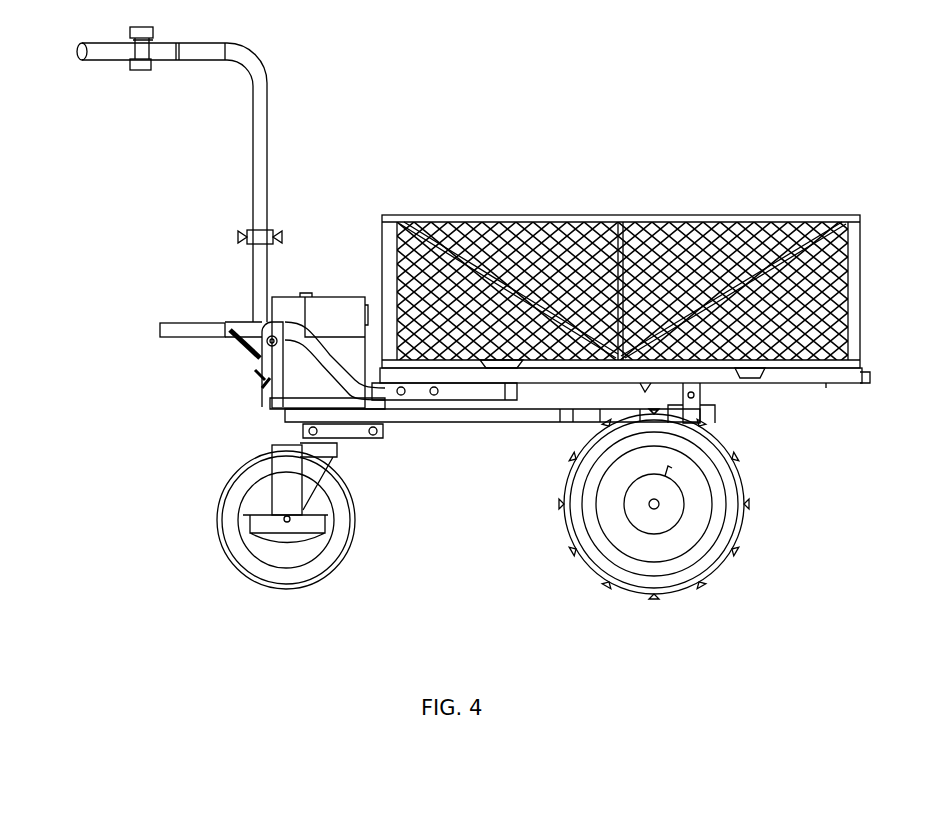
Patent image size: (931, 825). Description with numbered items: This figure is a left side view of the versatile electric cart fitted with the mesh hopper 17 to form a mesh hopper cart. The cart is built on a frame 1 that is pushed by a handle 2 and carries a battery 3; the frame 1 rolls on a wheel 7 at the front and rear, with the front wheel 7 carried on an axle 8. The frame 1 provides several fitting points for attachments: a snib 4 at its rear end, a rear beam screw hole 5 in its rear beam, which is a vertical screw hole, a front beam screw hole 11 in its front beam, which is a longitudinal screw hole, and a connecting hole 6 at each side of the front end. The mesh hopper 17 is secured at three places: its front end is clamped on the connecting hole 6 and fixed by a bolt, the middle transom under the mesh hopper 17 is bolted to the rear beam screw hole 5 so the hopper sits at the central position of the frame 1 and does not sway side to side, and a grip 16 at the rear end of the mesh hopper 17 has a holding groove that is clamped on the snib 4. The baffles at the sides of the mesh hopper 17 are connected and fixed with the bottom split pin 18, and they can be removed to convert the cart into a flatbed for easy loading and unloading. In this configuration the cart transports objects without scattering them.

The frame 1 is at (454, 425).
The handle 2 is at (108, 64).
The battery 3 is at (290, 296).
The snib 4 is at (262, 392).
The rear beam screw hole 5 is at (528, 425).
The connecting hole 6 is at (700, 425).
The wheel 7 is at (237, 578).
The axle 8 is at (845, 386).
The front beam screw hole 11 is at (575, 425).
The grip 16 is at (162, 340).
The mesh hopper 17 is at (560, 213).
The split pin 18 is at (748, 376).